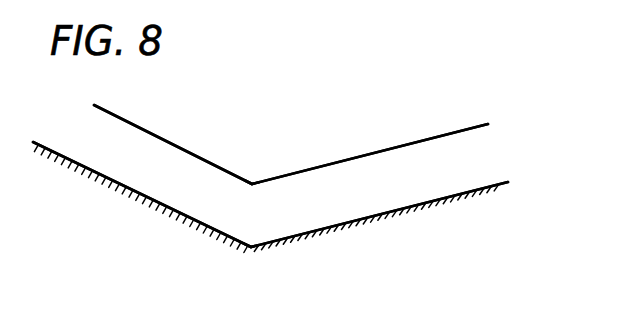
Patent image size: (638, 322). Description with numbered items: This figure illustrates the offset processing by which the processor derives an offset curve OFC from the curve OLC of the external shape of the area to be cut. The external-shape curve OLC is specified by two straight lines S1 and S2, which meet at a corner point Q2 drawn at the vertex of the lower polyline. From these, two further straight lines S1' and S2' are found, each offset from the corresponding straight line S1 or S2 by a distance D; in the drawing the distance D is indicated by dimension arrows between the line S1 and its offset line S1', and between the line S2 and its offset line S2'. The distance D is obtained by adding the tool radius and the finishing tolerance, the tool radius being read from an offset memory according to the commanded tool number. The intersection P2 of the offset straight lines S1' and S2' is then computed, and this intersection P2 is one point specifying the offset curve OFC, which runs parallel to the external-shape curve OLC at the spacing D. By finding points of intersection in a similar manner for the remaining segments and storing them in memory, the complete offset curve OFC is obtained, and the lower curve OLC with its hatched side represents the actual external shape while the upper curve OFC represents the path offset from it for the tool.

The straight line S1 is at (142, 202).
The straight line S2 is at (379, 239).
The offset straight line S1' is at (173, 139).
The offset straight line S2' is at (370, 139).
The offset curve OFC is at (231, 172).
The curve of the external shape OLC is at (183, 219).
The intersection P2 is at (260, 198).
The vertex of original lens curve Q2 is at (258, 266).
The offset distance D is at (124, 120).